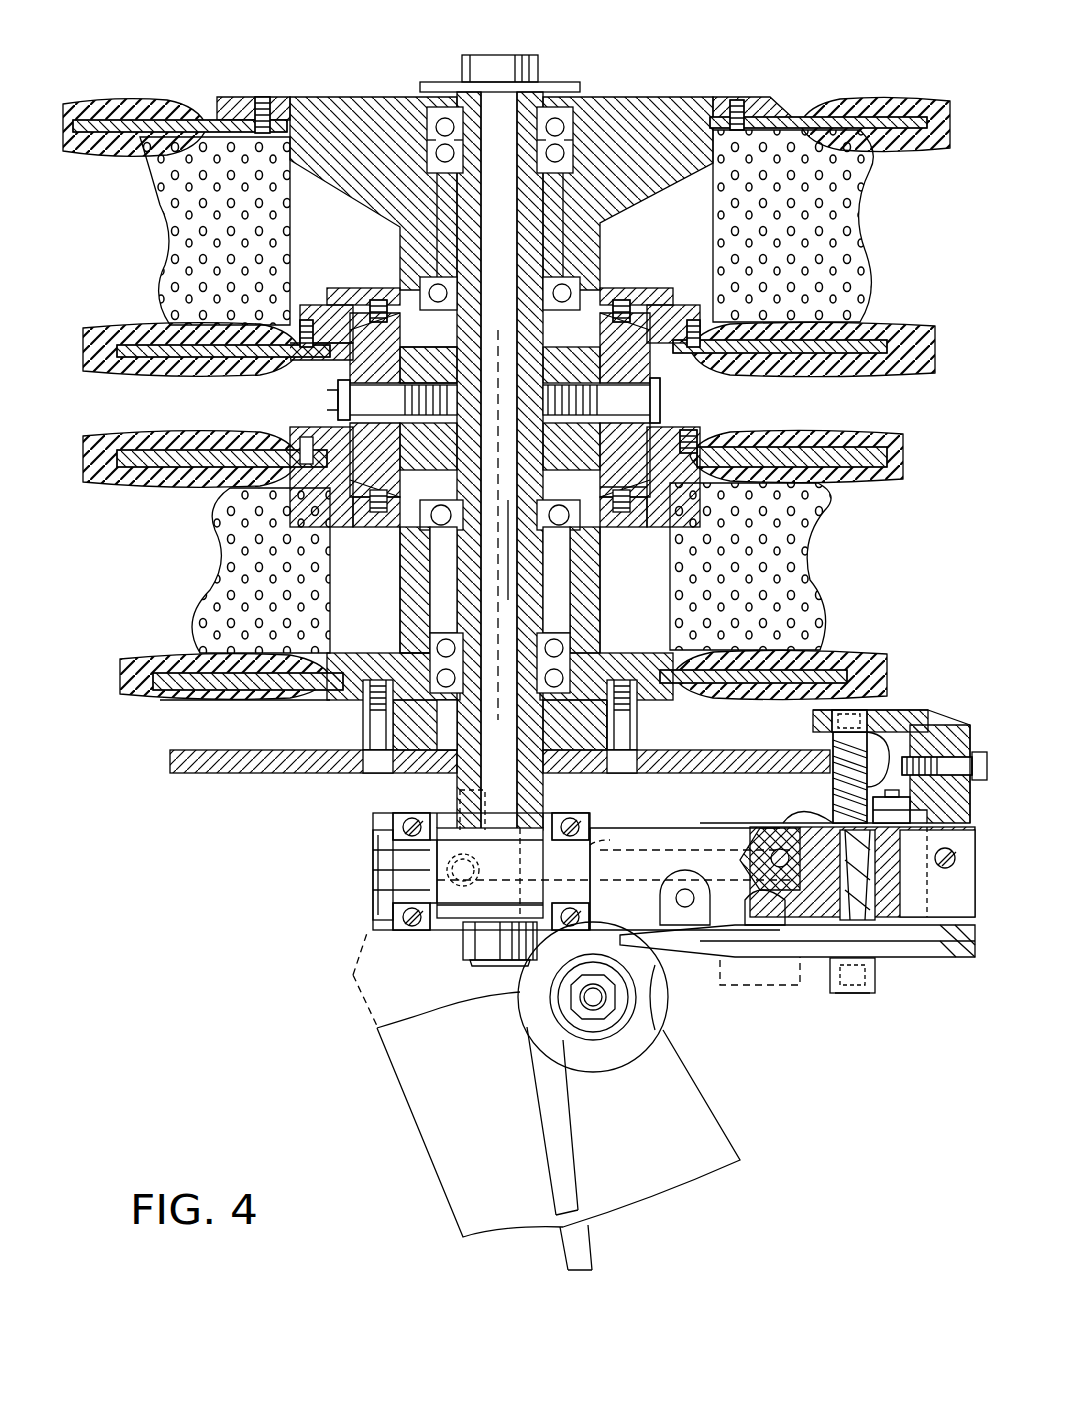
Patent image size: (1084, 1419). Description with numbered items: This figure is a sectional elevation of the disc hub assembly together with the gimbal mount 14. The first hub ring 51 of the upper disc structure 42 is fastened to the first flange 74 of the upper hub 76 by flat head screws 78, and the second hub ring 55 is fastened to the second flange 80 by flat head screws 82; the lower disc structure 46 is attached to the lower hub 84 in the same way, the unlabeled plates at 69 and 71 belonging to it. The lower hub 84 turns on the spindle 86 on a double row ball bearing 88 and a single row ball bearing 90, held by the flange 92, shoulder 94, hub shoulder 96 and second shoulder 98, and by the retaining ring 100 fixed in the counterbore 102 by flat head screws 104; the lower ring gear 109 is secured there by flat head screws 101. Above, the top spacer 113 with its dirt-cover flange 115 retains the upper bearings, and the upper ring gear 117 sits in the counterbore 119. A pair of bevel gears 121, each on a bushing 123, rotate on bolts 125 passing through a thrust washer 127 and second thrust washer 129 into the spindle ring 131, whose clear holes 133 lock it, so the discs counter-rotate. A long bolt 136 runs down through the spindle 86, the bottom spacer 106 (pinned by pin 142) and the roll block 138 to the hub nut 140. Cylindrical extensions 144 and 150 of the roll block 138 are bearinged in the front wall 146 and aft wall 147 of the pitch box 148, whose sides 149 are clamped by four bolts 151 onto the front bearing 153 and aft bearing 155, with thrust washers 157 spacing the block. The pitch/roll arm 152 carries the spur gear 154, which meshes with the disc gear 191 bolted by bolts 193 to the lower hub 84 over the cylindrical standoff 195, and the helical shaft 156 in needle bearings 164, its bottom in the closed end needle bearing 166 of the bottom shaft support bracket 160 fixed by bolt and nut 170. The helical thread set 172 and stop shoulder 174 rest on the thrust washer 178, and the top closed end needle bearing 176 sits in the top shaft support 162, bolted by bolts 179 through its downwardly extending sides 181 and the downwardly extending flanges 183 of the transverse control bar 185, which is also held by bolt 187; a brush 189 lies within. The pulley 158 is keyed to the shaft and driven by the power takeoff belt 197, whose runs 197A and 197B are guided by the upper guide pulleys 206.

The gimbal mount 14 is at (282, 886).
The upper disc structure 42 is at (90, 93).
The lower disc structure 46 is at (162, 712).
The first hub ring 51 is at (185, 126).
The second hub ring 55 is at (152, 340).
The third plate 69 is at (155, 470).
The fourth plate 71 is at (180, 677).
The first flange 74 is at (262, 100).
The upper hub 76 is at (320, 92).
The flat head screws 78 is at (262, 97).
The second flange 80 is at (305, 303).
The flat head screws 82 is at (300, 356).
The lower hub 84 is at (398, 597).
The spindle 86 is at (548, 236).
The double row ball bearing 88 is at (428, 642).
The single row ball bearing 90 is at (430, 578).
The flange 92 is at (438, 717).
The shoulder 94 is at (575, 646).
The hub shoulder 96 is at (425, 553).
The second shoulder 98 is at (556, 580).
The retaining ring 100 is at (432, 475).
The flat head screws 101 is at (610, 528).
The counterbore 102 is at (643, 490).
The flat head screws 104 is at (545, 500).
The bottom spacer 106 is at (457, 762).
The lower ring gear 109 is at (320, 507).
The top spacer 113 is at (540, 92).
The flange 115 is at (580, 90).
The upper ring gear 117 is at (675, 300).
The counterbore 119 is at (368, 305).
The bevel gears 121 is at (360, 368).
The bushing 123 is at (338, 412).
The bolt 125 is at (440, 382).
The thrust washer 127 is at (325, 392).
The second thrust washer 129 is at (420, 360).
The spindle ring 131 is at (440, 358).
The clear holes 133 is at (455, 403).
The long bolt 136 is at (500, 55).
The roll block 138 is at (500, 830).
The hub nut 140 is at (468, 940).
The pin 142 is at (490, 873).
The cylindrical extension 144 is at (395, 858).
The front wall 146 is at (390, 815).
The aft wall 147 is at (590, 818).
The pitch box 148 is at (375, 806).
The sides 149 is at (443, 822).
The cylindrical extension 150 is at (595, 850).
The bolts 151 is at (406, 930).
The pitch/roll arm 152 is at (660, 838).
The front bearing 153 is at (395, 878).
The spur gear 154 is at (785, 752).
The aft bearing 155 is at (540, 882).
The helical shaft 156 is at (855, 865).
The thrust washers 157 is at (543, 905).
The pulley 158 is at (925, 960).
The bottom shaft support bracket 160 is at (782, 1000).
The top shaft support 162 is at (940, 708).
The needle bearings 164 is at (875, 897).
The closed end needle bearing 166 is at (845, 992).
The bolt and nut 170 is at (660, 902).
The helical thread set 172 is at (833, 772).
The stop shoulder 174 is at (832, 740).
The top closed end needle bearing 176 is at (870, 703).
The thrust washer 178 is at (790, 811).
The bolts 179 is at (755, 843).
The downwardly extending sides 181 is at (766, 907).
The downwardly extending flanges 183 is at (948, 888).
The transverse control bar 185 is at (955, 708).
The bolt 187 is at (980, 752).
The brush 189 is at (840, 805).
The disc gear 191 is at (648, 762).
The bolts 193 is at (375, 766).
The cylindrical standoff 195 is at (363, 713).
The power takeoff belt 197 is at (690, 960).
The belt run 197A is at (590, 1245).
The belt run 197B is at (565, 1133).
The upper guide pulleys 206 is at (530, 1020).